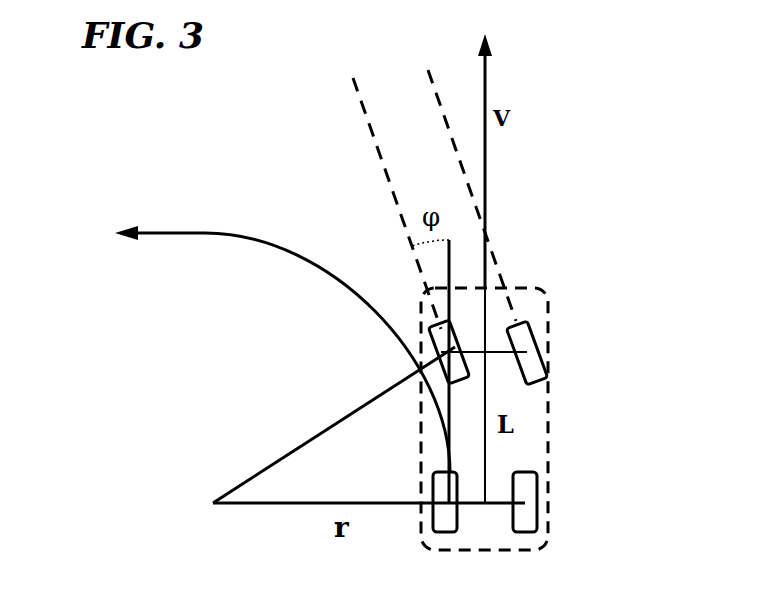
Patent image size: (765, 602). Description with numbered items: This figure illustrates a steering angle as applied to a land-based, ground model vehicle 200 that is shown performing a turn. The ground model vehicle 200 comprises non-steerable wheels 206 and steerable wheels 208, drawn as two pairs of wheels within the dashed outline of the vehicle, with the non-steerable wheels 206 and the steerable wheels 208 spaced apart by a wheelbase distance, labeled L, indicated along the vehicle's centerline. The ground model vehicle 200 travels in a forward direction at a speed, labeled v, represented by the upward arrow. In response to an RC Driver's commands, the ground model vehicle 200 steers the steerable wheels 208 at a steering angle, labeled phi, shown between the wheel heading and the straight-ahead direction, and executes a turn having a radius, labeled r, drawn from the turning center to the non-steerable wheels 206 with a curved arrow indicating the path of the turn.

The ground model vehicle 200 is at (567, 424).
The non-steerable wheels 206 is at (553, 498).
The steerable wheels 208 is at (552, 339).